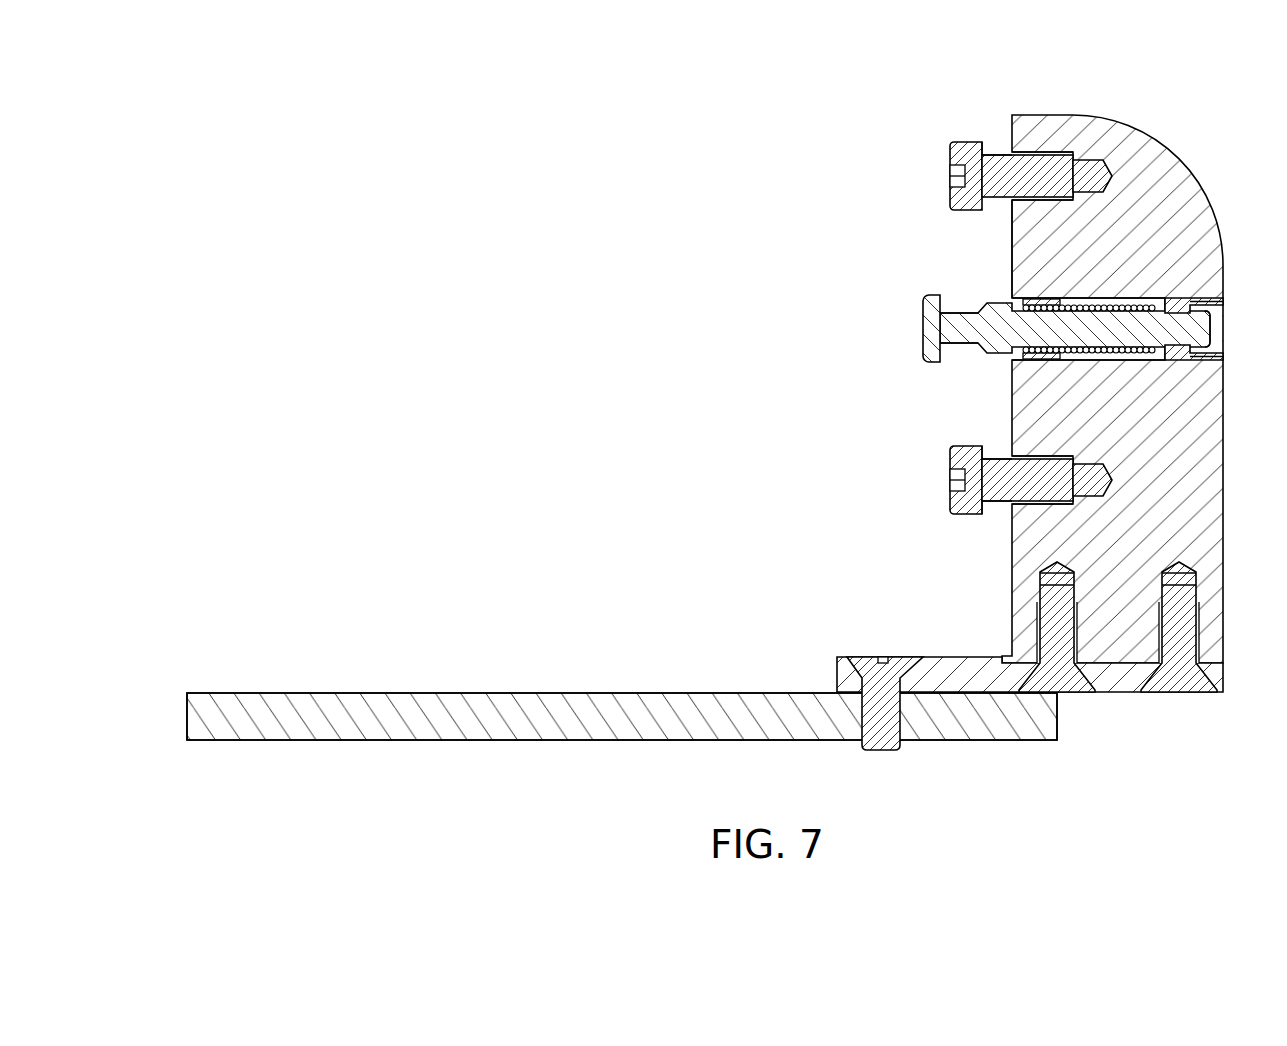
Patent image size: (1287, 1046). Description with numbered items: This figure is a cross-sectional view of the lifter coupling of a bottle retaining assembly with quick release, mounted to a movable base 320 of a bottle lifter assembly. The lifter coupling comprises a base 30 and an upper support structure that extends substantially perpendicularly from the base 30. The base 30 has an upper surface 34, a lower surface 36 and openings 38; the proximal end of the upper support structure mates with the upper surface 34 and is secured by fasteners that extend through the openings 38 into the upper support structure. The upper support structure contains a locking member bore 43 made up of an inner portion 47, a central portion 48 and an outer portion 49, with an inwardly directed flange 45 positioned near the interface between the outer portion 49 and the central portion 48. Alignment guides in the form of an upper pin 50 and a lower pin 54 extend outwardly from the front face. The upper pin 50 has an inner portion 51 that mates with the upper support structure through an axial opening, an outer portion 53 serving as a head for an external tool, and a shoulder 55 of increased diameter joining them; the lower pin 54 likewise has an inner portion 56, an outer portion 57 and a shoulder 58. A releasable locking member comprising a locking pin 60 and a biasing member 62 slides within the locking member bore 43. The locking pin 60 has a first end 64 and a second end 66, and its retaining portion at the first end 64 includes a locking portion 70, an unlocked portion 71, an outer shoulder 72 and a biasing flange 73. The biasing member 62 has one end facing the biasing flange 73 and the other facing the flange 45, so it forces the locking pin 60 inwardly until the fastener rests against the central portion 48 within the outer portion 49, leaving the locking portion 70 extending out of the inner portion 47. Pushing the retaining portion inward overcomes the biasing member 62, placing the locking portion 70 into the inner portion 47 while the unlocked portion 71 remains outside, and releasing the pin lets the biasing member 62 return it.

The base 30 is at (947, 693).
The movable base 320 is at (523, 741).
The upper surface 34 is at (940, 657).
The lower surface 36 is at (1175, 684).
The openings 38 is at (850, 673).
The locking member bore 43 is at (1147, 298).
The flange 45 is at (1175, 298).
The inner portion 47 is at (1050, 299).
The central portion 48 is at (1097, 305).
The outer portion 49 is at (1213, 355).
The upper pin 50 is at (987, 137).
The inner portion 51 is at (1030, 155).
The outer portion 53 is at (950, 152).
The lower pin 54 is at (978, 483).
The shoulder 55 is at (983, 145).
The inner portion 56 is at (998, 459).
The outer portion 57 is at (950, 480).
The shoulder 58 is at (994, 501).
The locking pin 60 is at (1163, 325).
The biasing member 62 is at (1108, 350).
The first end 64 is at (1078, 301).
The second end 66 is at (1211, 326).
The locking portion 70 is at (990, 303).
The unlocked portion 71 is at (960, 313).
The outer shoulder 72 is at (929, 296).
The biasing flange 73 is at (1012, 298).